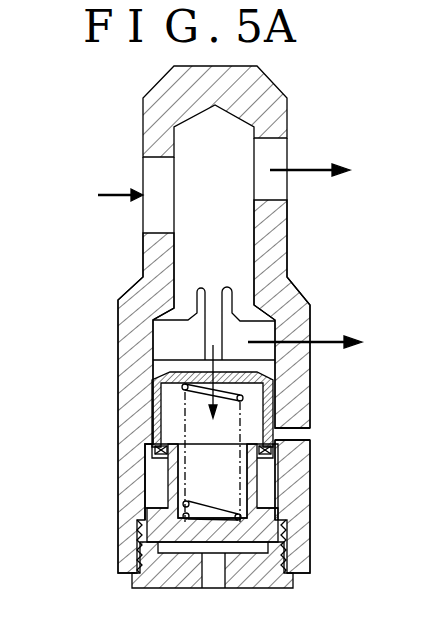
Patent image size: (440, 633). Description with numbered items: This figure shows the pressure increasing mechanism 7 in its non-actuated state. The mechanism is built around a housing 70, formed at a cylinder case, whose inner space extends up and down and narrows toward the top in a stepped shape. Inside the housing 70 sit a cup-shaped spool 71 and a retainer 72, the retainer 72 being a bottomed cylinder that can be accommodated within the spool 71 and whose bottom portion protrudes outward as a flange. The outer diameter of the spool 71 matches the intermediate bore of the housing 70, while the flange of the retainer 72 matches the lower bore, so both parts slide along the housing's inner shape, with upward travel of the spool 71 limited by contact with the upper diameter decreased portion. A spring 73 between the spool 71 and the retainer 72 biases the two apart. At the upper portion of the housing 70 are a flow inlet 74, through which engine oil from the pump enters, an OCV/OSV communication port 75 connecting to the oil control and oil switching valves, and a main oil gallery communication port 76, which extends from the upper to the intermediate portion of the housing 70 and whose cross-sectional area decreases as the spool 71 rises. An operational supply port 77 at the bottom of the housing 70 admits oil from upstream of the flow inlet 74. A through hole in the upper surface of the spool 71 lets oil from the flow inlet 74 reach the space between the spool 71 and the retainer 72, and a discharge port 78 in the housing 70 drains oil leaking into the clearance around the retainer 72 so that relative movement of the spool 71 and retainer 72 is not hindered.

The pressure increasing mechanism 7 is at (126, 107).
The housing 70 is at (267, 91).
The spool 71 is at (152, 412).
The retainer 72 is at (152, 505).
The spring 73 is at (266, 402).
The flow inlet 74 is at (155, 233).
The OCV/OSV communication port 75 is at (272, 203).
The main oil gallery communication port 76 is at (262, 326).
The operational supply port 77 is at (224, 577).
The discharge port 78 is at (297, 437).